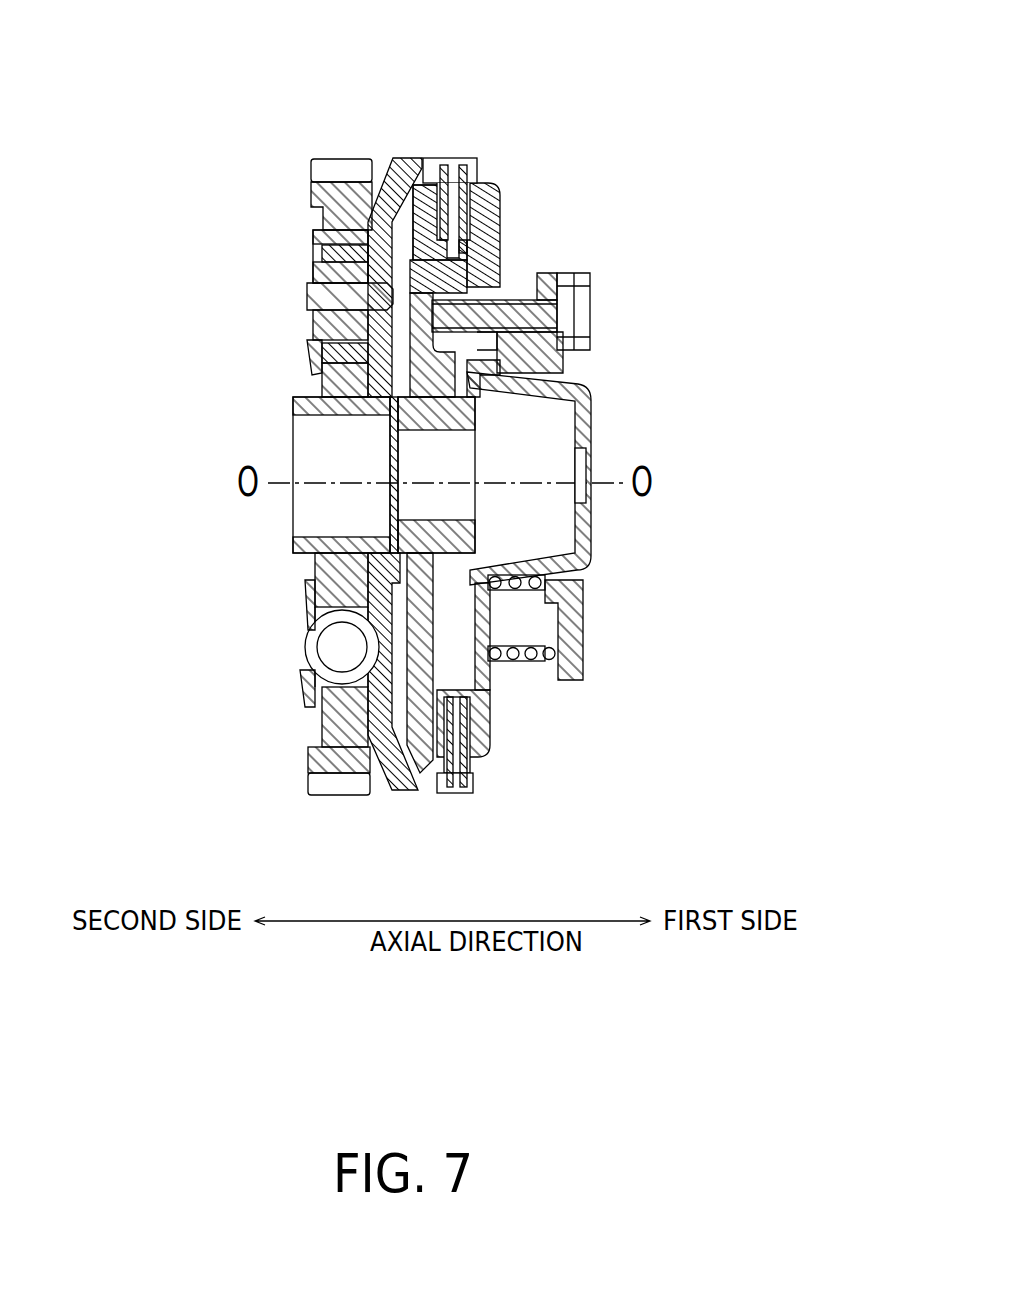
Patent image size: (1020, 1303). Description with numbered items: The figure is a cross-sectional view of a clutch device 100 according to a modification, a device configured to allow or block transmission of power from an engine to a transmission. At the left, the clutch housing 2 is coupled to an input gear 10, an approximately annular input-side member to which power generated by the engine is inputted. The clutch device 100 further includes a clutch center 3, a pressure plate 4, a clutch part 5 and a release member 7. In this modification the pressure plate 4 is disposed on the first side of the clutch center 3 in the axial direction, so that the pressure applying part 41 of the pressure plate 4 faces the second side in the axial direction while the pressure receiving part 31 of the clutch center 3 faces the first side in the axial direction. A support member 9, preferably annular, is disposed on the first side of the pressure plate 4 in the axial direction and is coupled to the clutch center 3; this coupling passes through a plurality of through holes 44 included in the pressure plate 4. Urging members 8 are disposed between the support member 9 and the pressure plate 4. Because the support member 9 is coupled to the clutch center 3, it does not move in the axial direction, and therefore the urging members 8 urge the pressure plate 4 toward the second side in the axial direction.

The clutch device 100 is at (573, 103).
The input gear 10 is at (308, 191).
The clutch housing 2 is at (394, 164).
The pressure receiving part 31 is at (430, 193).
The clutch part 5 is at (469, 151).
The pressure applying part 41 is at (488, 201).
The pressure plate 4 is at (507, 242).
The through holes 44 is at (508, 289).
The release member 7 is at (595, 400).
The clutch center 3 is at (489, 538).
The support member 9 is at (587, 650).
The urging members 8 is at (527, 664).